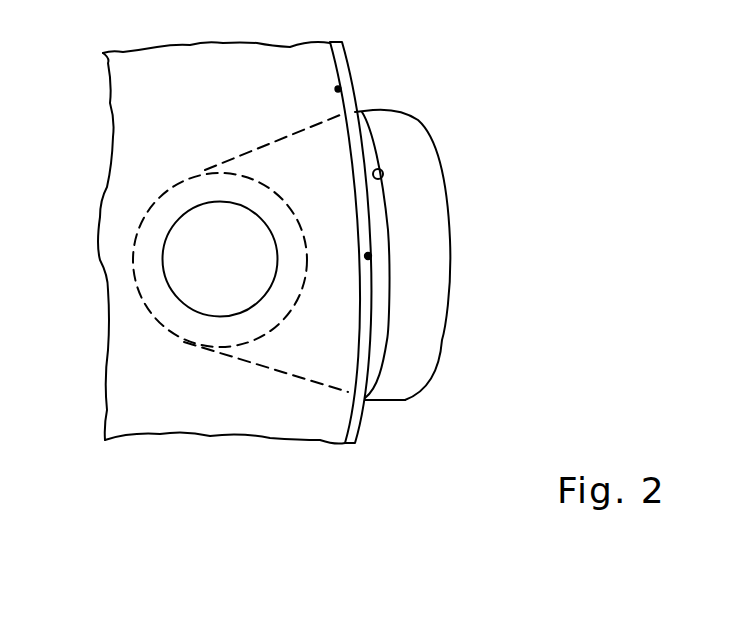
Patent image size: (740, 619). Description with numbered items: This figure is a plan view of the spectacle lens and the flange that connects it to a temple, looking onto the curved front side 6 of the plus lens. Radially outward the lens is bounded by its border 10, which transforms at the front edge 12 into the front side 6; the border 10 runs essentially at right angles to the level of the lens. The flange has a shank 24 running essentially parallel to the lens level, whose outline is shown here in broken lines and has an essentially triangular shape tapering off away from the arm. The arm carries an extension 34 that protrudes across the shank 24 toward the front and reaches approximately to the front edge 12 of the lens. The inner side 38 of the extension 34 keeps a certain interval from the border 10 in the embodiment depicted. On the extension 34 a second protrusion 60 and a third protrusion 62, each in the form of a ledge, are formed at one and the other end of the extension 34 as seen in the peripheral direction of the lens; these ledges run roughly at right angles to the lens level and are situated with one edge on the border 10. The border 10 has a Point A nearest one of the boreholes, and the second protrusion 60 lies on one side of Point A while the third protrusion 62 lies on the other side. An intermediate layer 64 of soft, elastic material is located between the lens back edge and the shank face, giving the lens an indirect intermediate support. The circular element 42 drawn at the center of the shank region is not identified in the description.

The front side 6 is at (113, 170).
The border 10 is at (347, 57).
The front edge 12 is at (338, 89).
The shank 24 is at (308, 383).
The extension 34 is at (437, 232).
The inner side 38 is at (382, 176).
The bore 42 is at (190, 297).
The second protrusion 60 is at (371, 111).
The third protrusion 62 is at (365, 400).
The intermediate layer 64 is at (378, 240).
The Point A is at (368, 256).